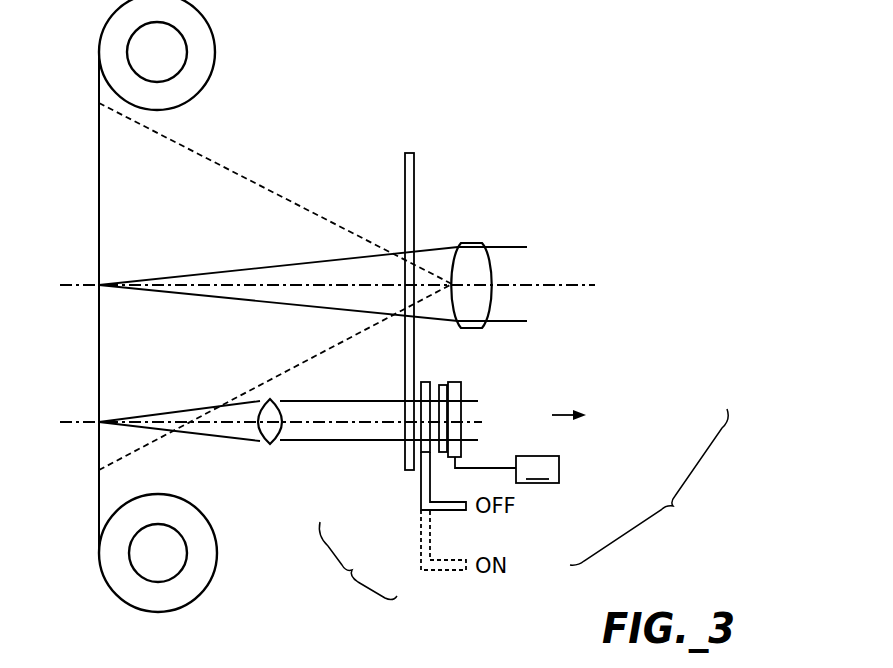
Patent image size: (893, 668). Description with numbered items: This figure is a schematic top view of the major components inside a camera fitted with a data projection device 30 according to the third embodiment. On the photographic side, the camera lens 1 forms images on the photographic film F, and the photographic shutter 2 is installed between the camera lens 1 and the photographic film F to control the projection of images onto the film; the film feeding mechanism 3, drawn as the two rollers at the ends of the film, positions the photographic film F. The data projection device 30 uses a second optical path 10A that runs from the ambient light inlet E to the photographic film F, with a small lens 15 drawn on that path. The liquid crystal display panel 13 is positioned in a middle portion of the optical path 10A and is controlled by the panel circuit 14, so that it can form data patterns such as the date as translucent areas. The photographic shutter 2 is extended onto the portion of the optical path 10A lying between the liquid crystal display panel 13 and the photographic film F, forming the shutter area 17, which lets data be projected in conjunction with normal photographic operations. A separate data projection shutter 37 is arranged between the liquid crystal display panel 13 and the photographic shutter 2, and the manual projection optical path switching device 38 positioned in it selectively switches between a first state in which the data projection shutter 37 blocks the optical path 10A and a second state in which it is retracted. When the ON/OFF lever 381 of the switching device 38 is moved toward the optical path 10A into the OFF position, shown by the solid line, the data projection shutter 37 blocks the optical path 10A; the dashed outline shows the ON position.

The film feeding mechanism 3 is at (213, 37).
The photographic film F is at (99, 176).
The camera lens 1 is at (478, 243).
The photographic shutter 2 is at (414, 157).
The lens 15 is at (272, 446).
The data projection shutter 37 is at (427, 382).
The ON/OFF lever 381 is at (420, 492).
The liquid crystal display panel 13 is at (461, 388).
The panel circuit 14 is at (537, 469).
The shutter area 17 is at (385, 466).
The manual projection optical path switching device 38 is at (355, 561).
The ambient light inlet E is at (559, 416).
The optical path 10A is at (606, 399).
The data projection device 30 is at (649, 487).